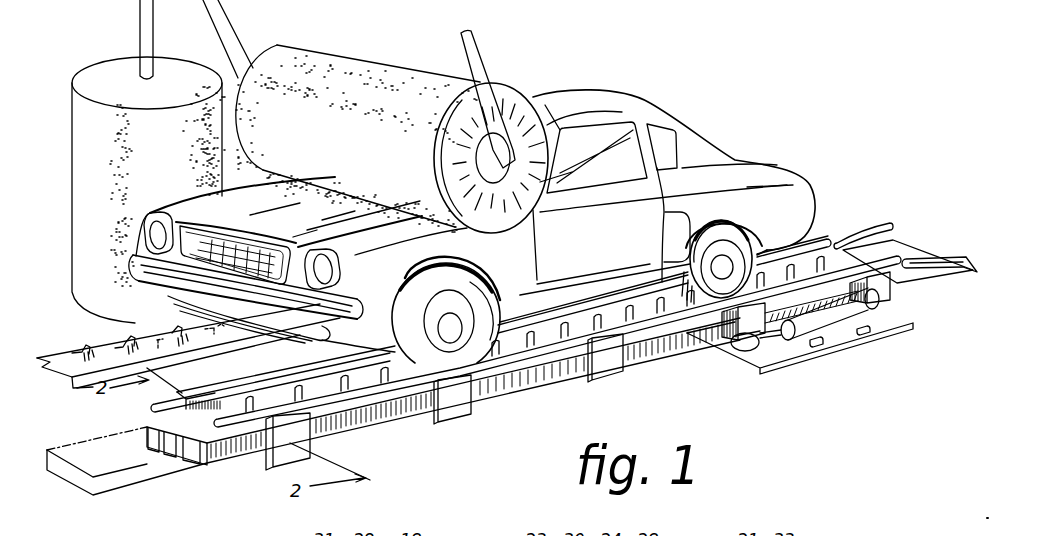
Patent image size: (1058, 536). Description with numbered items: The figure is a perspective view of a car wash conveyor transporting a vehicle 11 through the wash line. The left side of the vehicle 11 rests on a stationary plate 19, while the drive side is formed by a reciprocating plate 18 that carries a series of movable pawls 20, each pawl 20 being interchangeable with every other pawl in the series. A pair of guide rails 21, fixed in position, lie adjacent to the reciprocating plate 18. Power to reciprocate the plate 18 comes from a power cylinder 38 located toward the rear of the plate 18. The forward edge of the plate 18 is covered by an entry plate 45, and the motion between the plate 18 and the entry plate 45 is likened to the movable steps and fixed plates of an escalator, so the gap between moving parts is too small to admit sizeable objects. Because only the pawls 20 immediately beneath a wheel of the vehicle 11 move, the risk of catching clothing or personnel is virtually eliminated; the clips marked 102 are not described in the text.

The vehicle 11 is at (660, 104).
The reciprocating plate 18 is at (200, 462).
The stationary plate 19 is at (100, 343).
The movable pawls 20 is at (527, 340).
The guide rails 21 is at (366, 385).
The power cylinder 38 is at (853, 335).
The entry plate 45 is at (888, 246).
The clips 102 is at (160, 347).